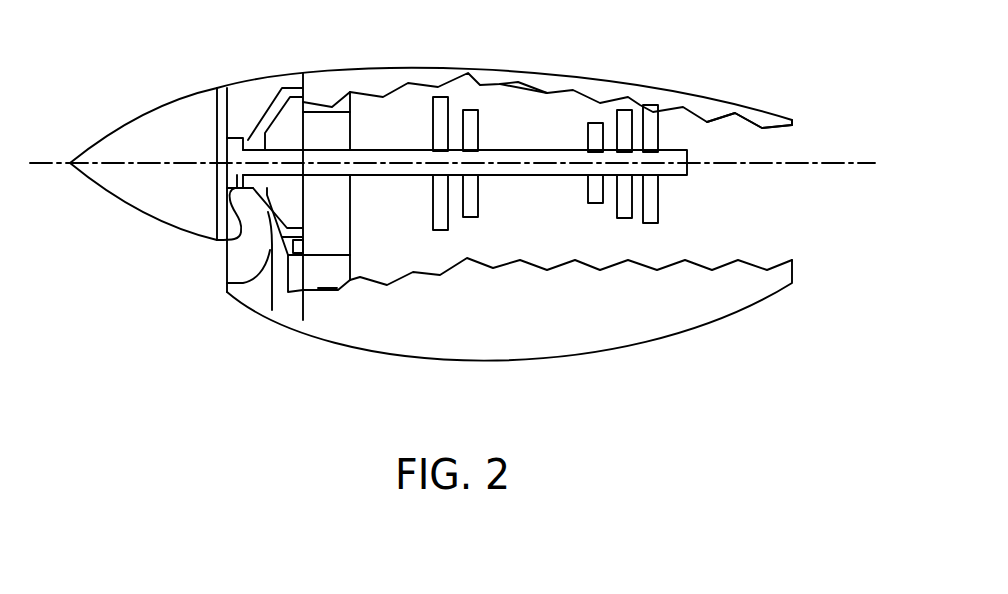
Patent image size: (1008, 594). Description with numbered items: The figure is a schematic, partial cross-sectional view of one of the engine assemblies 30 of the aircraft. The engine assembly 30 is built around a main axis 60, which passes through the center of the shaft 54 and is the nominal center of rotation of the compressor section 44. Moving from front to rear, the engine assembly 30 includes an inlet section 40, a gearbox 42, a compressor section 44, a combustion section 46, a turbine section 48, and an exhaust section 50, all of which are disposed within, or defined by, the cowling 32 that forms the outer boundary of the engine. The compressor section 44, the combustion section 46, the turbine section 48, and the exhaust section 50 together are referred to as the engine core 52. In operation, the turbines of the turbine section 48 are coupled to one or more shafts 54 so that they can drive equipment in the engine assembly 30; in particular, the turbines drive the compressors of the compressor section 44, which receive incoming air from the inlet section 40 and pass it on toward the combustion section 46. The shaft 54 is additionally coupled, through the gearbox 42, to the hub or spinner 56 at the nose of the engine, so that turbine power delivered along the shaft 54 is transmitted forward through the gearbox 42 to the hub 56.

The engine assembly 30 is at (107, 205).
The cowling 32 is at (450, 348).
The inlet section 40 is at (240, 297).
The gearbox 42 is at (238, 138).
The compressor section 44 is at (457, 110).
The combustion section 46 is at (537, 110).
The turbine section 48 is at (635, 115).
The exhaust section 50 is at (735, 128).
The engine core 52 is at (426, 251).
The shaft 54 is at (380, 150).
The hub 56 is at (133, 116).
The main axis 60 is at (852, 162).